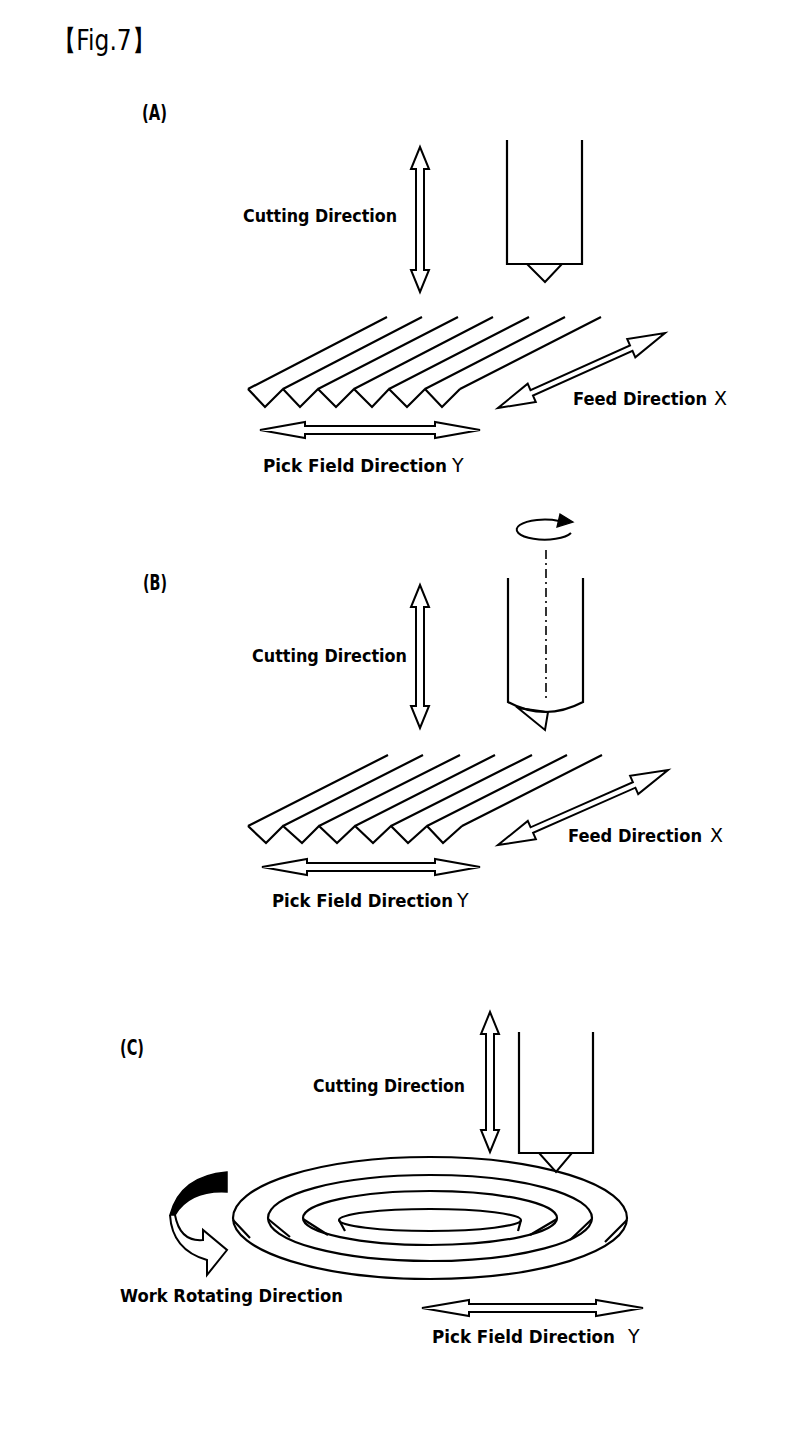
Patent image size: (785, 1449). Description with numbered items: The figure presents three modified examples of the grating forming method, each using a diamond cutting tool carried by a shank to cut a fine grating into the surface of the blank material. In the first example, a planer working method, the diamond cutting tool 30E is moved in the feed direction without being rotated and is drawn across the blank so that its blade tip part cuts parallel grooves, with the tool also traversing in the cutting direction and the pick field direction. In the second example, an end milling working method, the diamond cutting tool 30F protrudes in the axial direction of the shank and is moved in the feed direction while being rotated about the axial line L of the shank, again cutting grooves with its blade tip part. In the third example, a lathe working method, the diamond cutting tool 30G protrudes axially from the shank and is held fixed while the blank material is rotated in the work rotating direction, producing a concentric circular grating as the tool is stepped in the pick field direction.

The diamond cutting tool 30E is at (555, 272).
The diamond cutting tool 30F is at (547, 727).
The diamond cutting tool 30G is at (567, 1163).
The axial line L is at (547, 568).